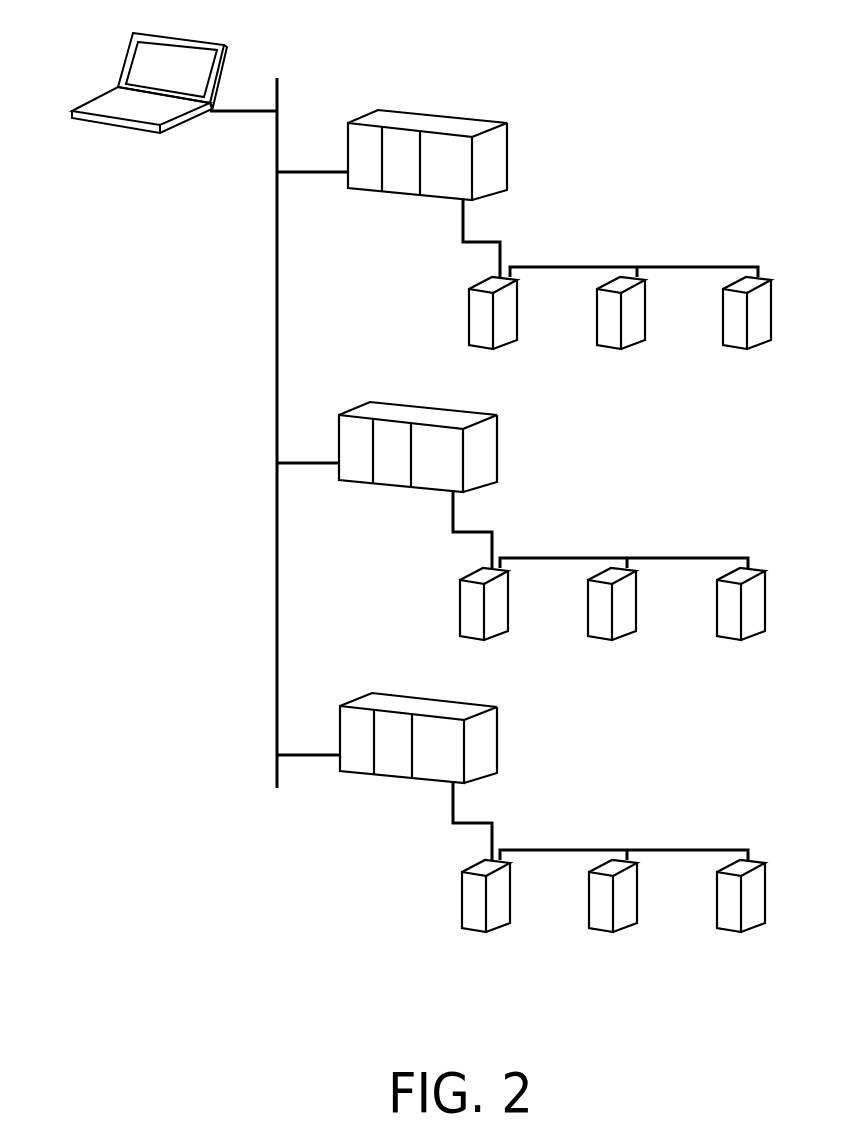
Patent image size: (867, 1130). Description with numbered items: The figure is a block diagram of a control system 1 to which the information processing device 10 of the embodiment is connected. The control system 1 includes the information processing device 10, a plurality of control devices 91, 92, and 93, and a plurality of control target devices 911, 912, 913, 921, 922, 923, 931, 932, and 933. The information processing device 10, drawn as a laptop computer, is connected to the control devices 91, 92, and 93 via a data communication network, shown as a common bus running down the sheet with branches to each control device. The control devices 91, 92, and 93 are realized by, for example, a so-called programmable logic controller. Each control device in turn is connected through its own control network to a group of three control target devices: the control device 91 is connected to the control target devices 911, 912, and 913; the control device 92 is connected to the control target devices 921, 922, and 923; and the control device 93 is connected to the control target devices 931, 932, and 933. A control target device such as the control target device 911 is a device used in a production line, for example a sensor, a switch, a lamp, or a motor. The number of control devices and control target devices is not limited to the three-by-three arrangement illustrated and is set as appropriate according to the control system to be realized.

The control system 1 is at (704, 57).
The information processing device 10 is at (205, 42).
The control device 91 is at (487, 122).
The control device 92 is at (478, 417).
The control device 93 is at (478, 707).
The control target device 911 is at (471, 318).
The control target device 912 is at (599, 318).
The control target device 913 is at (725, 318).
The control target device 921 is at (462, 609).
The control target device 922 is at (590, 609).
The control target device 923 is at (719, 609).
The control target device 931 is at (464, 901).
The control target device 932 is at (591, 901).
The control target device 933 is at (719, 901).